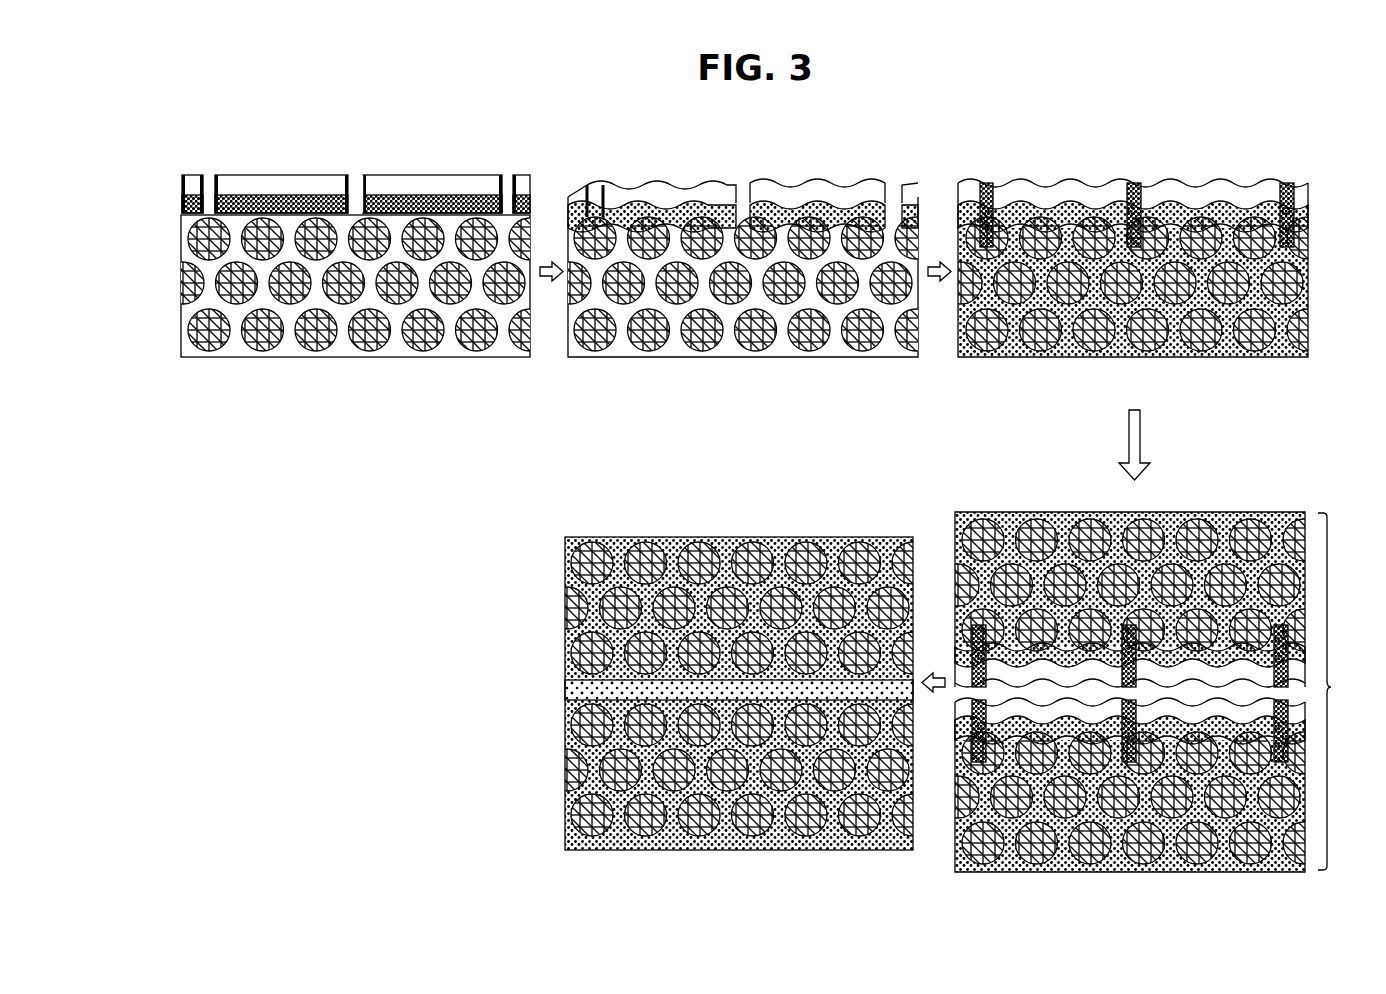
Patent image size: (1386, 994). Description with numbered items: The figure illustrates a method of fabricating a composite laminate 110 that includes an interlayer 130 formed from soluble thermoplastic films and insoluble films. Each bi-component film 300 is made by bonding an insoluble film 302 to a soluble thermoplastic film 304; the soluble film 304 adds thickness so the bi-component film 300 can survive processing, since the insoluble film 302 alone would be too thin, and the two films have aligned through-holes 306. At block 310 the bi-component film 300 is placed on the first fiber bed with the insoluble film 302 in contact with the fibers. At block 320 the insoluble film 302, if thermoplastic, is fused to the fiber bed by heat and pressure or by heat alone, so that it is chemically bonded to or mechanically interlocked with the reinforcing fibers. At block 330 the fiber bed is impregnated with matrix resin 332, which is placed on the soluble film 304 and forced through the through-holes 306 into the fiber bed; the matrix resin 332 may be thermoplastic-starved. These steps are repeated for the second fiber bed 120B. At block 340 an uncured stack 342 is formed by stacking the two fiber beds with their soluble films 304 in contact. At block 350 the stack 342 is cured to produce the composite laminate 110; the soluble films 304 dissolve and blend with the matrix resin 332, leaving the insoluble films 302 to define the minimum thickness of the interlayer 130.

The composite laminate 110 is at (832, 530).
The second fiber bed 120B is at (1240, 513).
The interlayer 130 is at (562, 688).
The bi-component film 300 is at (179, 175).
The insoluble film 302 is at (283, 193).
The soluble thermoplastic film 304 is at (470, 177).
The through-holes 306 is at (358, 172).
The block of placing the bi-component film 310 is at (302, 134).
The block of fusing the insoluble film 320 is at (665, 136).
The block of impregnating with matrix resin 330 is at (1065, 136).
The matrix resin 332 is at (1132, 190).
The block of forming the uncured stack 340 is at (1039, 459).
The uncured stack 342 is at (1345, 691).
The block of curing the stack 350 is at (640, 489).